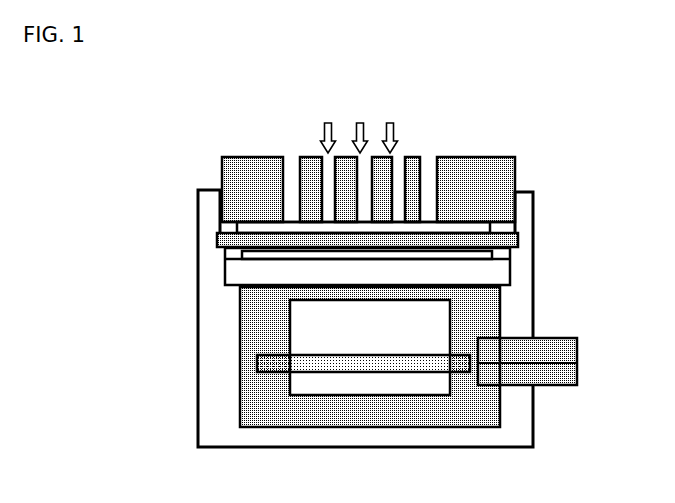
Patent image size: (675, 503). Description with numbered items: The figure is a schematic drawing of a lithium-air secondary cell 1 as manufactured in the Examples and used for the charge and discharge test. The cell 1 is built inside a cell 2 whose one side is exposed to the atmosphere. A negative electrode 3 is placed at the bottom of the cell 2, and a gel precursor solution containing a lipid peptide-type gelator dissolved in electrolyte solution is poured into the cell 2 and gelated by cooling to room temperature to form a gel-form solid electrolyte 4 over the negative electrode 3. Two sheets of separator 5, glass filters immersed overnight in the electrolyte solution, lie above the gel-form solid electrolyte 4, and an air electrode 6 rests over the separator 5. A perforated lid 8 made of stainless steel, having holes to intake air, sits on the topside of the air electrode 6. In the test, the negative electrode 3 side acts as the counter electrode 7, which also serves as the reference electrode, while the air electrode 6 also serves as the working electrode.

The lithium-air secondary cell 1 is at (585, 74).
The cell 2 is at (418, 437).
The negative electrode 3 is at (372, 363).
The gel-form solid electrolyte 4 is at (433, 318).
The separator 5 is at (477, 275).
The air electrode 6 is at (462, 237).
The counter electrode 7 is at (580, 363).
The perforated lid 8 is at (493, 173).